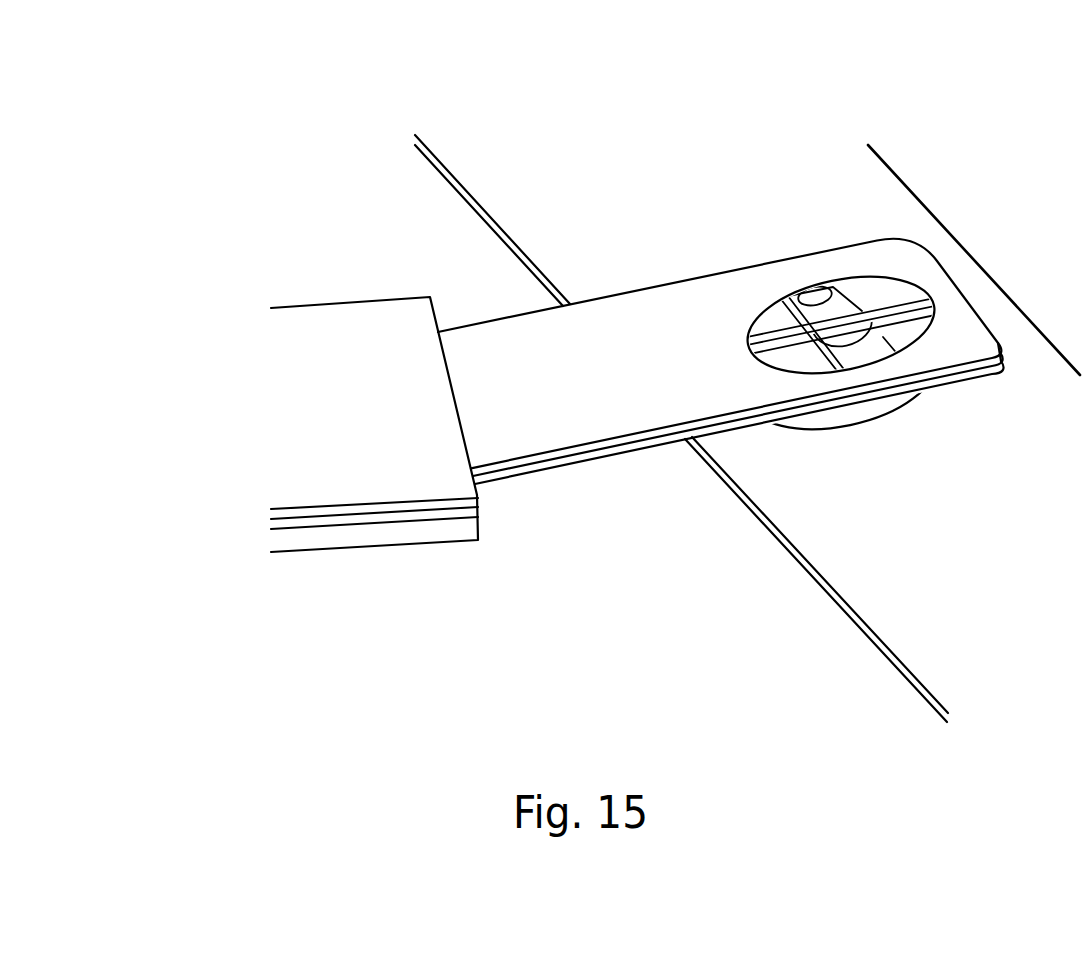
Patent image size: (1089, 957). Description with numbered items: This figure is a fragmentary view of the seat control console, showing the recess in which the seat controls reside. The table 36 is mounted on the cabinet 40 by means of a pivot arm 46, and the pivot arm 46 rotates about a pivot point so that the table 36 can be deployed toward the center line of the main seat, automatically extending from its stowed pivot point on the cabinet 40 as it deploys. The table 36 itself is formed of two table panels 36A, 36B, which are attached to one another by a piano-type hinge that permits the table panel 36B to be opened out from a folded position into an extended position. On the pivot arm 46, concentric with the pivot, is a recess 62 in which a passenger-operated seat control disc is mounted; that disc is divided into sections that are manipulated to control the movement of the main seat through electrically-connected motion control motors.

The table 36 is at (273, 413).
The table panel 36A is at (285, 540).
The table panel 36B is at (295, 320).
The cabinet 40 is at (721, 327).
The pivot arm 46 is at (542, 427).
The recess 62 is at (870, 270).